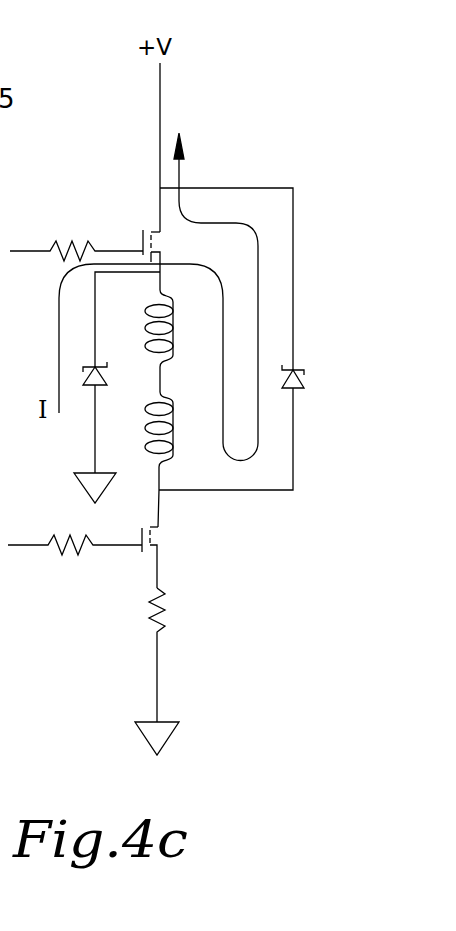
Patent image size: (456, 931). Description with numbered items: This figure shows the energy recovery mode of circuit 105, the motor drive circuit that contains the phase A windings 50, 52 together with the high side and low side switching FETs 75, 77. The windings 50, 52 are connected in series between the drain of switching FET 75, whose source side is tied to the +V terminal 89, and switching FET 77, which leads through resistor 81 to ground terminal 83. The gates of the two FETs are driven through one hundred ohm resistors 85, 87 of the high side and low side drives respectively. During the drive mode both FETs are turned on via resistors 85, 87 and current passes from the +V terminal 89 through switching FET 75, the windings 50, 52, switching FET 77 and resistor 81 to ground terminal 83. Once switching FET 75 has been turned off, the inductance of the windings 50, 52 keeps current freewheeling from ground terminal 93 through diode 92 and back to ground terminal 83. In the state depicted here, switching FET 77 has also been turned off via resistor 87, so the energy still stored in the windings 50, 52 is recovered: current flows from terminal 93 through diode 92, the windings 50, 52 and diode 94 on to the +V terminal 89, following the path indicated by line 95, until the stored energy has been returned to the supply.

The +V terminal 89 is at (161, 90).
The circuit 105 is at (298, 126).
The switching FET 75 is at (151, 232).
The resistor 85 is at (50, 241).
The winding 50 is at (175, 348).
The winding 52 is at (174, 445).
The diode 92 is at (104, 374).
The ground terminal 93 is at (74, 474).
The line 95 is at (227, 334).
The diode 94 is at (304, 380).
The switching FET 77 is at (149, 553).
The resistor 87 is at (56, 553).
The resistor 81 is at (159, 632).
The ground terminal 83 is at (172, 732).